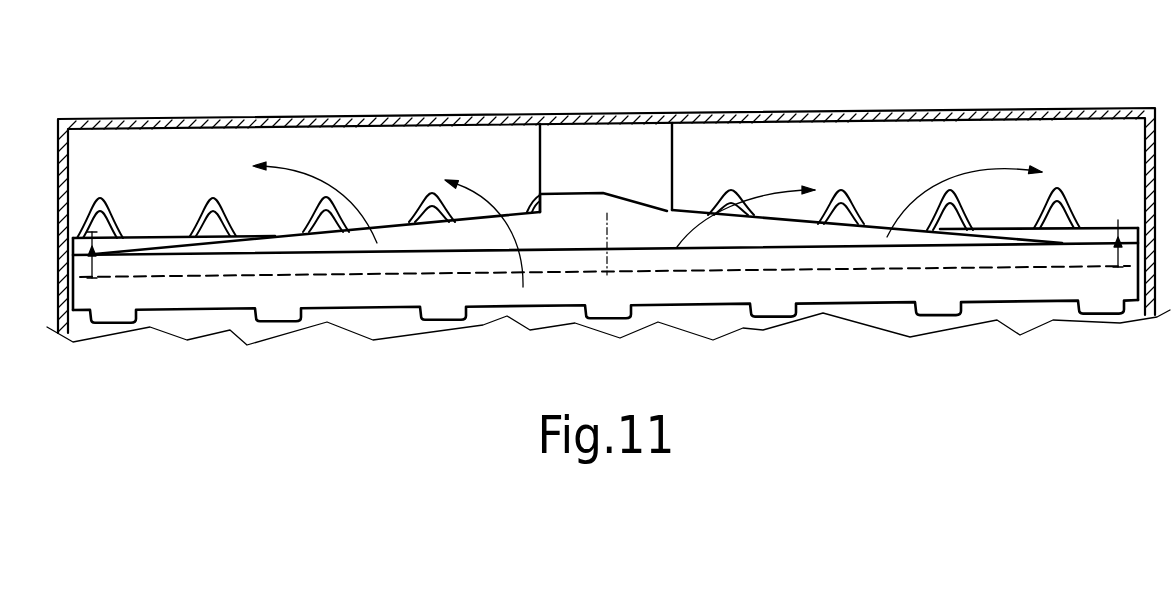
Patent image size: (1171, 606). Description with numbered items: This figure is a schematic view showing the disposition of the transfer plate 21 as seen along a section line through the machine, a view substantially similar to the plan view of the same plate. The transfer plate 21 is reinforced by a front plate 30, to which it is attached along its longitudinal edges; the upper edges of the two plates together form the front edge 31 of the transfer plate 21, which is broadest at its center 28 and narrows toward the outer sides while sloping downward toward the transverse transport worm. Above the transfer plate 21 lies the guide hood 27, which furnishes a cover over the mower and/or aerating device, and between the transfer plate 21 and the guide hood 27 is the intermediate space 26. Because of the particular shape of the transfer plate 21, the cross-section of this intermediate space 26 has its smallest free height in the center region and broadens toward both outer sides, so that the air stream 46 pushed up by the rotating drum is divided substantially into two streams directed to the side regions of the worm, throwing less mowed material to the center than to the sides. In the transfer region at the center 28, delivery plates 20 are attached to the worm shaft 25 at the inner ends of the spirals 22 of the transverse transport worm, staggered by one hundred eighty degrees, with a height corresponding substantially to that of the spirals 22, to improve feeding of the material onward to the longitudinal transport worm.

The delivery plates 20 is at (578, 203).
The transfer plate 21 is at (670, 317).
The spirals 22 is at (212, 210).
The worm shaft 25 is at (1020, 233).
The intermediate space 26 is at (410, 167).
The guide hood 27 is at (805, 110).
The center 28 is at (607, 172).
The front plate 30 is at (362, 292).
The front edge 31 is at (157, 237).
The air stream 46 is at (297, 166).